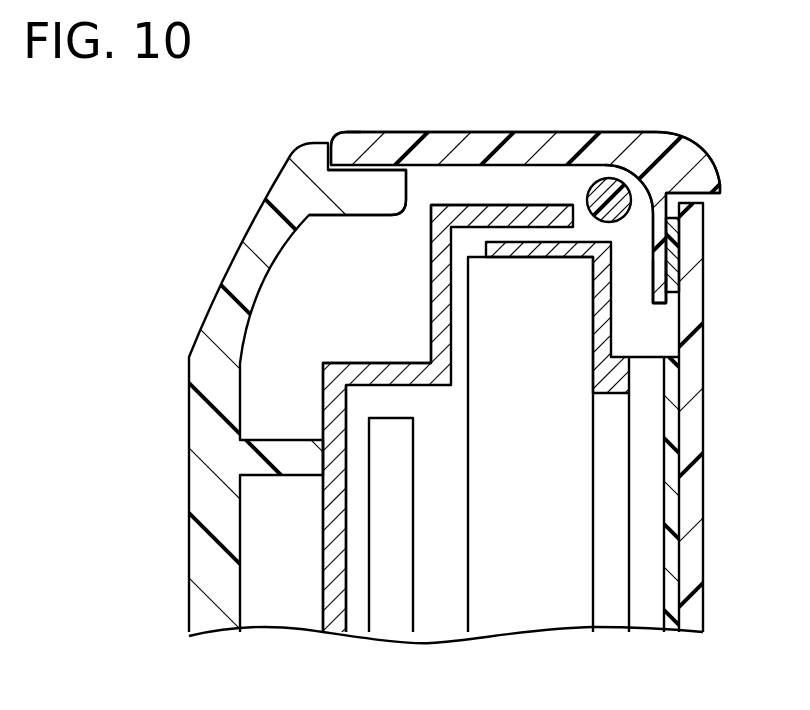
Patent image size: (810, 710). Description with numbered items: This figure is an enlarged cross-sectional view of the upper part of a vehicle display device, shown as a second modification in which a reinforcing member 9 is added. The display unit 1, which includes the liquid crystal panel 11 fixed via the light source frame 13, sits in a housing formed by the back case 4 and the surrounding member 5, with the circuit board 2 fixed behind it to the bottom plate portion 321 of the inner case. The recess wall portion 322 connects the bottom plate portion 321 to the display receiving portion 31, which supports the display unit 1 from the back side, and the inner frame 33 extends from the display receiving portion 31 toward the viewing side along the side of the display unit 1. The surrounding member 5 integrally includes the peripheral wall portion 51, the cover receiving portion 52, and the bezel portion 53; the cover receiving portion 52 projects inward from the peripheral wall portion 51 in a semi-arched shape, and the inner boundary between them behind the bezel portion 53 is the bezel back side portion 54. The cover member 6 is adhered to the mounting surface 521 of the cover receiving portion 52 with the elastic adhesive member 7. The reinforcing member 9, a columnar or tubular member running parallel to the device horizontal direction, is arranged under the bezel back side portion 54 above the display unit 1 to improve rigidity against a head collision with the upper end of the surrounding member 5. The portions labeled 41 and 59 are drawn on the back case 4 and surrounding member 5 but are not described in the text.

The display unit 1 is at (522, 605).
The circuit board 2 is at (388, 606).
The back case 4 is at (200, 450).
The surrounding member 5 is at (369, 131).
The cover member 6 is at (702, 440).
The elastic adhesive member 7 is at (680, 250).
The reinforcing member 9 is at (593, 180).
The liquid crystal panel 11 is at (645, 610).
The light source frame 13 is at (600, 332).
The display receiving portion 31 is at (430, 317).
The inner frame 33 is at (482, 217).
The protruding portion 41 is at (375, 190).
The peripheral wall portion 51 is at (403, 148).
The cover receiving portion 52 is at (657, 276).
The bezel portion 53 is at (718, 170).
The bezel back side portion 54 is at (637, 177).
The end portion 59 is at (357, 160).
The bottom plate portion 321 is at (323, 602).
The recess wall portion 322 is at (362, 362).
The mounting surface 521 is at (673, 200).